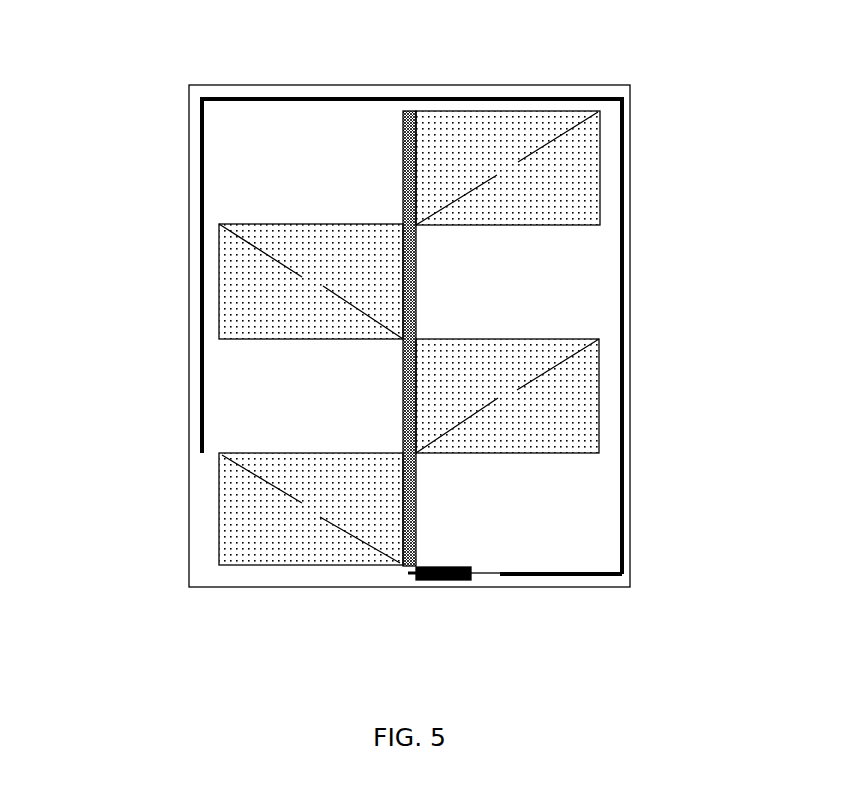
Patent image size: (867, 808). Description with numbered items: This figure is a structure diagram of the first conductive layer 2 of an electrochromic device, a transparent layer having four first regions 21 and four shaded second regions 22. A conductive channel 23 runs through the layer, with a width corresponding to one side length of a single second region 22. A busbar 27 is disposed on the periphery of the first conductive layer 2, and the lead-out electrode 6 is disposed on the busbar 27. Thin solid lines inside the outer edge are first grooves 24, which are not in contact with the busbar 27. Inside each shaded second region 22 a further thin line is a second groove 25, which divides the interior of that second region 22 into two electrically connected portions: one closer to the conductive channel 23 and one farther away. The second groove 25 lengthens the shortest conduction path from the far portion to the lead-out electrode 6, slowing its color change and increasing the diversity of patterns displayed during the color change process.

The first conductive layer 2 is at (372, 321).
The lead-out electrode 6 is at (442, 582).
The first region 21 is at (232, 157).
The second region 22 is at (597, 190).
The conductive channel 23 is at (415, 497).
The first groove 24 is at (600, 133).
The second groove 25 is at (272, 257).
The busbar 27 is at (585, 576).